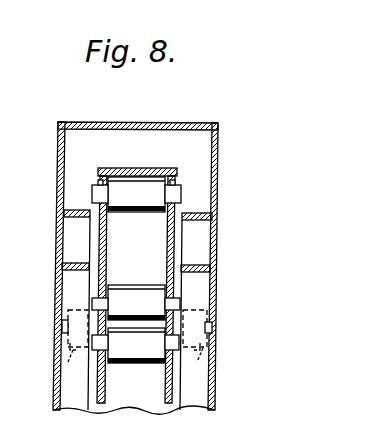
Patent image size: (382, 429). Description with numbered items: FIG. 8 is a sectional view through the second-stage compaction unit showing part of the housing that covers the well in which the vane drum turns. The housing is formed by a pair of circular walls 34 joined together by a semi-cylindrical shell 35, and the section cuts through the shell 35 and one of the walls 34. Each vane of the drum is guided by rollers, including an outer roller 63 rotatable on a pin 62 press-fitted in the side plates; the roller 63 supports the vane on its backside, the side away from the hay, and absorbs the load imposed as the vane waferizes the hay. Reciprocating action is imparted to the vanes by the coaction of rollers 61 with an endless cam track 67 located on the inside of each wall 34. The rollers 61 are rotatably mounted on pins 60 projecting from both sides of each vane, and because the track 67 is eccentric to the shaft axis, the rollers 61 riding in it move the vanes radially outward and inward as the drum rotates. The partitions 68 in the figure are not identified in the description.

The circular wall 34 is at (58, 139).
The semi-cylindrical shell 35 is at (151, 124).
The pin 60 is at (63, 326).
The roller 61 is at (70, 357).
The pin 62 is at (94, 188).
The outer roller 63 is at (143, 178).
The cam track 67 is at (77, 233).
The shelf partition 68 is at (70, 209).